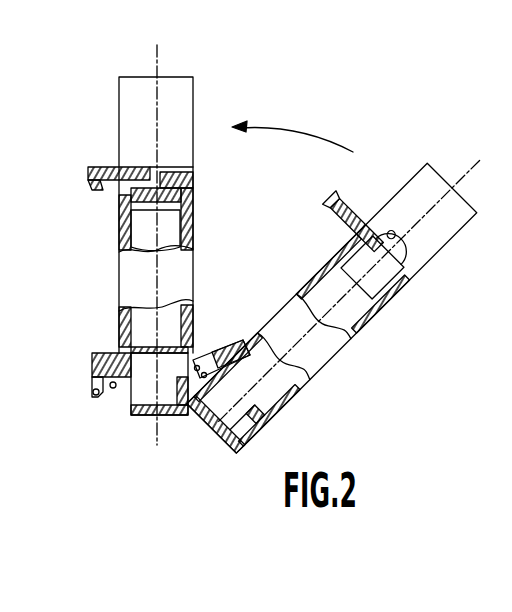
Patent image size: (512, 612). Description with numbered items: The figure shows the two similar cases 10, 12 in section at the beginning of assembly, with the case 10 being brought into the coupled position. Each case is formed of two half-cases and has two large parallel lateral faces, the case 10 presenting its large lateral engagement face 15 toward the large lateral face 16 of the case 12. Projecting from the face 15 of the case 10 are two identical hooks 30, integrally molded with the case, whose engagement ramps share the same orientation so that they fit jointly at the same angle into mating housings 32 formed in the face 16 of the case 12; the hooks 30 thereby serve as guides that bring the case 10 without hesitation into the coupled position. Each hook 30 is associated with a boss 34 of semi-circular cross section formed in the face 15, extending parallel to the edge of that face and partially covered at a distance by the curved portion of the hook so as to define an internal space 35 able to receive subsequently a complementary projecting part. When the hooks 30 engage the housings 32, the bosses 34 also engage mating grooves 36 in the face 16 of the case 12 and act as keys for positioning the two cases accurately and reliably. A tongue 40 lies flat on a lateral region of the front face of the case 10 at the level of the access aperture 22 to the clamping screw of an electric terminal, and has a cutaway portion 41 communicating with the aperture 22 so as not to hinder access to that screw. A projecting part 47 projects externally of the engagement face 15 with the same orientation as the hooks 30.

The case 10 is at (362, 339).
The case 12 is at (112, 258).
The large lateral face 15 is at (303, 303).
The large lateral face 16 is at (190, 274).
The access aperture 22 is at (150, 207).
The hook 30 is at (203, 362).
The mating housing 32 is at (142, 382).
The boss 34 is at (262, 413).
The internal space 35 is at (222, 415).
The mating groove 36 is at (147, 413).
The tongue 40 is at (357, 218).
The cutaway portion 41 is at (388, 234).
The projecting part 47 is at (340, 209).